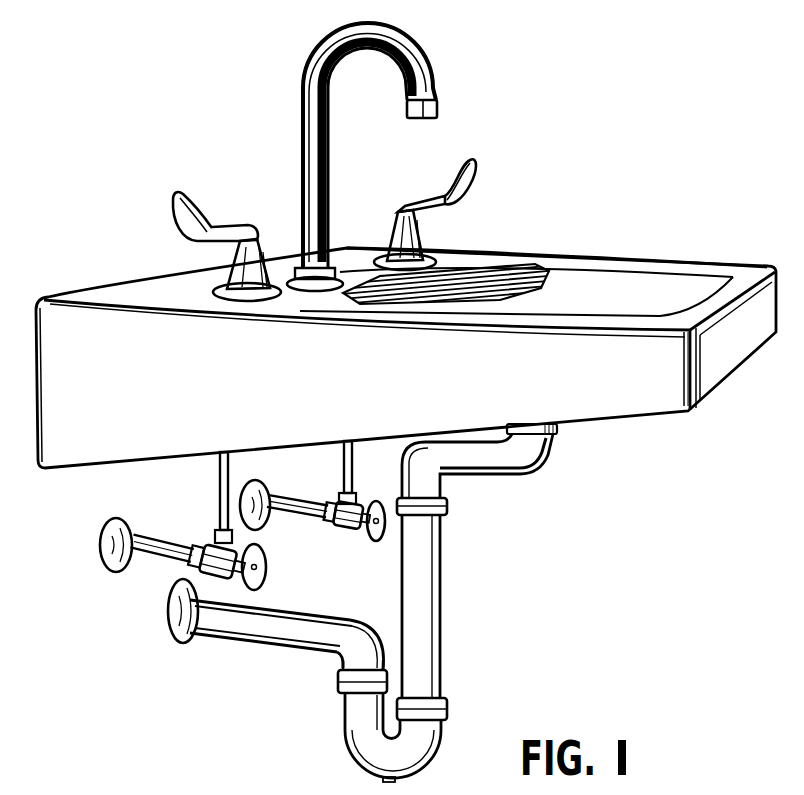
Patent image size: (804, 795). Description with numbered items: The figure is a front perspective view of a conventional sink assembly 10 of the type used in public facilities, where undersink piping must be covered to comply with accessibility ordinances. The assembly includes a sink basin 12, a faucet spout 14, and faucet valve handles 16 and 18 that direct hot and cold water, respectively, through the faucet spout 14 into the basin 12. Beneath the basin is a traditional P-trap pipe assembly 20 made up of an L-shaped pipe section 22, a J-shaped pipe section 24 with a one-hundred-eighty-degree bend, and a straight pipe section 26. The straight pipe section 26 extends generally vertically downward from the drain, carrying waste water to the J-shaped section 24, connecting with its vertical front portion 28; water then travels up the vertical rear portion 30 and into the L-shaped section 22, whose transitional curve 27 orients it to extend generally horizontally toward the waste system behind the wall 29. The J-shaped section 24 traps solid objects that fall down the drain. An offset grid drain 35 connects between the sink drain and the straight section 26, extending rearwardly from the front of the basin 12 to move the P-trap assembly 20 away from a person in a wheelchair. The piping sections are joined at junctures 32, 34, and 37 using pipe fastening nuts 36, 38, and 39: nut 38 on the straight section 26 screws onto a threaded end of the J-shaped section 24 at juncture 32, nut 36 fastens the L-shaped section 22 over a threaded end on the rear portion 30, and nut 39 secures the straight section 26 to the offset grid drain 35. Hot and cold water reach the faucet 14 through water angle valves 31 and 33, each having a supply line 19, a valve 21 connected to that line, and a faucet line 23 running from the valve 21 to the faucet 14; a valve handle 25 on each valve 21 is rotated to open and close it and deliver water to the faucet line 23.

The sink assembly 10 is at (708, 185).
The sink basin 12 is at (370, 375).
The faucet spout 14 is at (428, 52).
The faucet valve handle 16 is at (172, 220).
The faucet valve handle 18 is at (478, 181).
The supply line 19 is at (140, 534).
The P-trap pipe assembly 20 is at (372, 603).
The valve 21 is at (205, 540).
The L-shaped pipe section 22 is at (264, 642).
The faucet line 23 is at (222, 462).
The J-shaped pipe section 24 is at (350, 745).
The valve handle 25 is at (264, 584).
The straight pipe section 26 is at (446, 632).
The transitional curve 27 is at (368, 626).
The vertical front portion 28 is at (445, 720).
The wall 29 is at (100, 636).
The vertical rear portion 30 is at (342, 704).
The water angle valve 31 is at (165, 566).
The juncture 32 is at (340, 668).
The water angle valve 33 is at (326, 500).
The juncture 34 is at (445, 692).
The offset grid drain 35 is at (518, 482).
The pipe fastening nut 36 is at (338, 683).
The juncture 37 is at (448, 499).
The pipe fastening nut 38 is at (436, 744).
The pipe fastening nut 39 is at (436, 522).